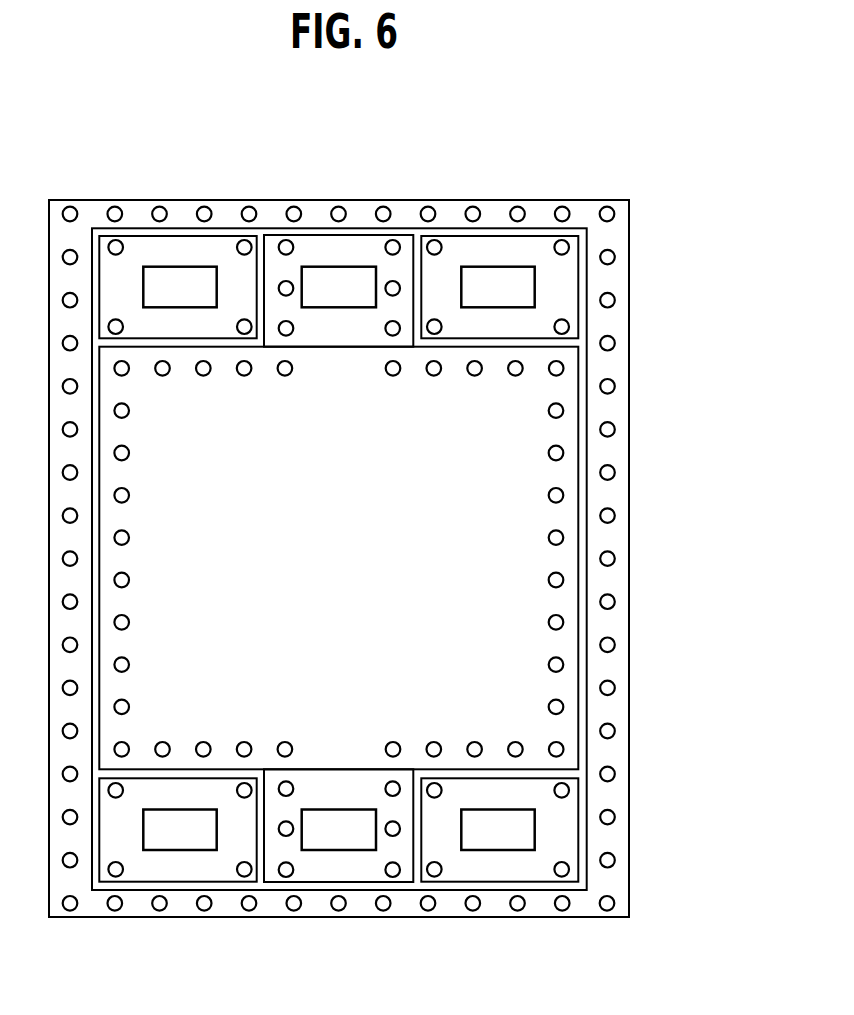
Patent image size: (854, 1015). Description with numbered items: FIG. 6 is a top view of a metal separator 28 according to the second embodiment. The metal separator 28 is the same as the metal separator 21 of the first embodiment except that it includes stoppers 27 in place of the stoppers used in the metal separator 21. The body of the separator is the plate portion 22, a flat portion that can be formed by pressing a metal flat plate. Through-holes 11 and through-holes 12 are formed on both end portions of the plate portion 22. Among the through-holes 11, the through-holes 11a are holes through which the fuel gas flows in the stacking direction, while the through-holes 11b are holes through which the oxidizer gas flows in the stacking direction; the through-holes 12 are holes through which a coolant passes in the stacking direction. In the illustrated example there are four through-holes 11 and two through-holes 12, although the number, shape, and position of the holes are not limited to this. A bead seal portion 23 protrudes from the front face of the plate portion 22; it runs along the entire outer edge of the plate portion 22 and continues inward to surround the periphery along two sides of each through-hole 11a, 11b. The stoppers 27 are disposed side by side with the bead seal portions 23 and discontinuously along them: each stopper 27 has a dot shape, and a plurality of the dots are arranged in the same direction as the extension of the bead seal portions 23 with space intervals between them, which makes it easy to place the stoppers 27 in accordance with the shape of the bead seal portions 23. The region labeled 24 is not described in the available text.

The through-holes 11 is at (338, 559).
The through-holes 11a is at (190, 270).
The through-holes 11b is at (507, 268).
The through-holes 12 is at (350, 268).
The metal separator 21 is at (399, 559).
The plate portion 22 is at (378, 558).
The bead seal portion 23 is at (399, 559).
The central region 24 is at (582, 370).
The stoppers 27 is at (608, 644).
The metal separator 28 is at (399, 543).